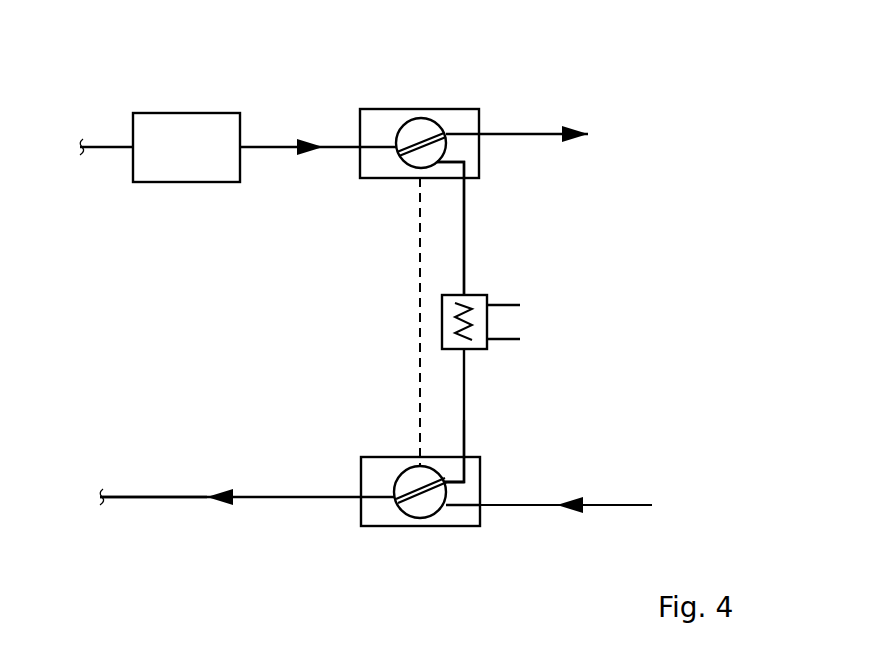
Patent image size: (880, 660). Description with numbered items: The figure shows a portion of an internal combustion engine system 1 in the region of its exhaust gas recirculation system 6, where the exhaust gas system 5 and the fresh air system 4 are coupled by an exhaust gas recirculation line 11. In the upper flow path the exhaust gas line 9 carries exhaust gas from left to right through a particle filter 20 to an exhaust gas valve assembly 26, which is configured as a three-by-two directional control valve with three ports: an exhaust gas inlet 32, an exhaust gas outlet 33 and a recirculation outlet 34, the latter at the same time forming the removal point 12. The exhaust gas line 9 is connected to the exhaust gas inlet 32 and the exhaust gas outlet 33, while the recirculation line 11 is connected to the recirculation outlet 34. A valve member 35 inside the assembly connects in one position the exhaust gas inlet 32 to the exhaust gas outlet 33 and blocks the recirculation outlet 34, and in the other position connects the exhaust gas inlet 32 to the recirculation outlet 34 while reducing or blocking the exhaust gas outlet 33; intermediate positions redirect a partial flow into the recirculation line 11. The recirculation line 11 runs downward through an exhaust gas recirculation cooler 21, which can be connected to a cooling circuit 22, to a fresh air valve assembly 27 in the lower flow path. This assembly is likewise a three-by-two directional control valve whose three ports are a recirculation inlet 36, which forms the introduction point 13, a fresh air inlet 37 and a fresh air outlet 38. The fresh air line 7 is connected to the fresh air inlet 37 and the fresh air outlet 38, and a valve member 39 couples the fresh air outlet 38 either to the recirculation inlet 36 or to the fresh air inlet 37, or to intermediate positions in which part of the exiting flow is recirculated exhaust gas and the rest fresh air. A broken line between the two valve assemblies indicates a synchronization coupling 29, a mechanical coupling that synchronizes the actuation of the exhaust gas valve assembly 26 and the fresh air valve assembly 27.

The internal combustion engine system 1 is at (600, 122).
The fresh air system 4 is at (160, 497).
The exhaust gas system 5 is at (97, 147).
The exhaust gas recirculation system 6 is at (465, 220).
The fresh air line 7 is at (257, 498).
The exhaust gas line 9 is at (272, 147).
The exhaust gas recirculation line 11 is at (465, 250).
The removal point 12 is at (440, 170).
The introduction point 13 is at (447, 480).
The particle filter 20 is at (185, 113).
The exhaust gas recirculation cooler 21 is at (488, 320).
The cooling circuit 22 is at (493, 340).
The exhaust gas valve assembly 26 is at (405, 109).
The fresh air valve assembly 27 is at (395, 526).
The synchronization coupling 29 is at (418, 278).
The exhaust gas inlet 32 is at (358, 147).
The exhaust gas outlet 33 is at (482, 133).
The recirculation outlet 34 is at (443, 153).
The valve member 35 is at (420, 138).
The recirculation inlet 36 is at (447, 485).
The fresh air inlet 37 is at (443, 505).
The fresh air outlet 38 is at (358, 497).
The valve member 39 is at (424, 496).